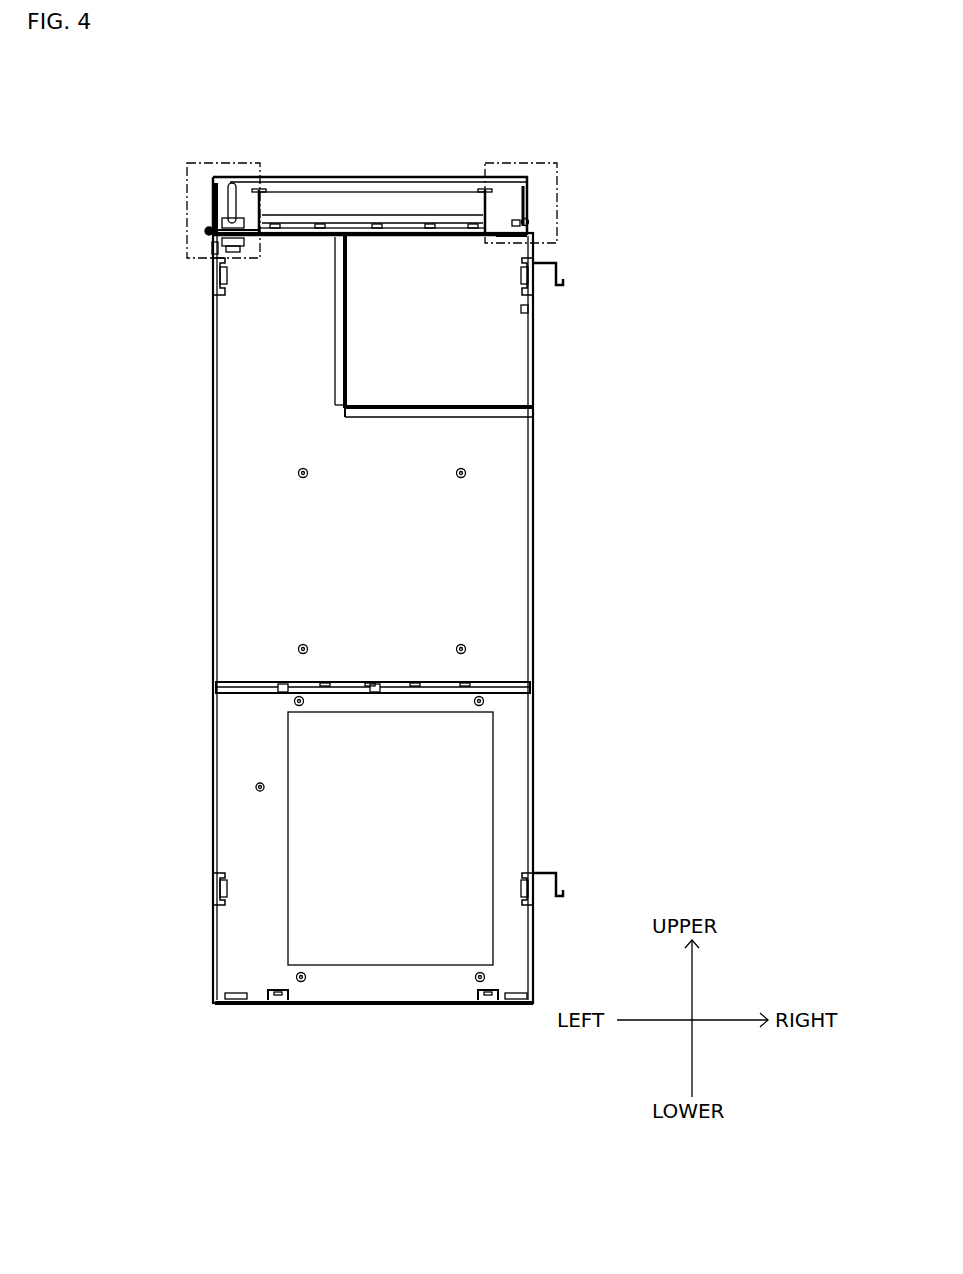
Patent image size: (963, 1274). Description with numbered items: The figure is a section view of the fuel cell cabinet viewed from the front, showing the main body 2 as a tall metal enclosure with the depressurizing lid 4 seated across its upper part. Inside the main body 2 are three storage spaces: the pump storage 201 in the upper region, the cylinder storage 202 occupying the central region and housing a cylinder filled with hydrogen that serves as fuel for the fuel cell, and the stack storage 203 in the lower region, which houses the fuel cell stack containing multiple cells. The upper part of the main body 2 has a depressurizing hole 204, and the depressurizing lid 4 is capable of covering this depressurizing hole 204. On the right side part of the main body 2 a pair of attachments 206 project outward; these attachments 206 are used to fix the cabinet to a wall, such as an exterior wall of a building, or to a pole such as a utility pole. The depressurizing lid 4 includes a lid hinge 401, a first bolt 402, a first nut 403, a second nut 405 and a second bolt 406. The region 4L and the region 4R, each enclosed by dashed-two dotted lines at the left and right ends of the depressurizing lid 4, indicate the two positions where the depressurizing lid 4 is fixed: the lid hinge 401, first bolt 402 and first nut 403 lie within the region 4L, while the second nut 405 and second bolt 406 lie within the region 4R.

The main body 2 is at (560, 518).
The depressurizing lid 4 is at (362, 165).
The region 4L is at (237, 160).
The region 4R is at (557, 193).
The pump storage 201 is at (453, 345).
The cylinder storage 202 is at (493, 565).
The stack storage 203 is at (468, 822).
The depressurizing hole 204 is at (310, 192).
The attachments 206 is at (560, 283).
The lid hinge 401 is at (210, 232).
The first bolt 402 is at (213, 247).
The first nut 403 is at (218, 200).
The second nut 405 is at (522, 220).
The second bolt 406 is at (530, 222).